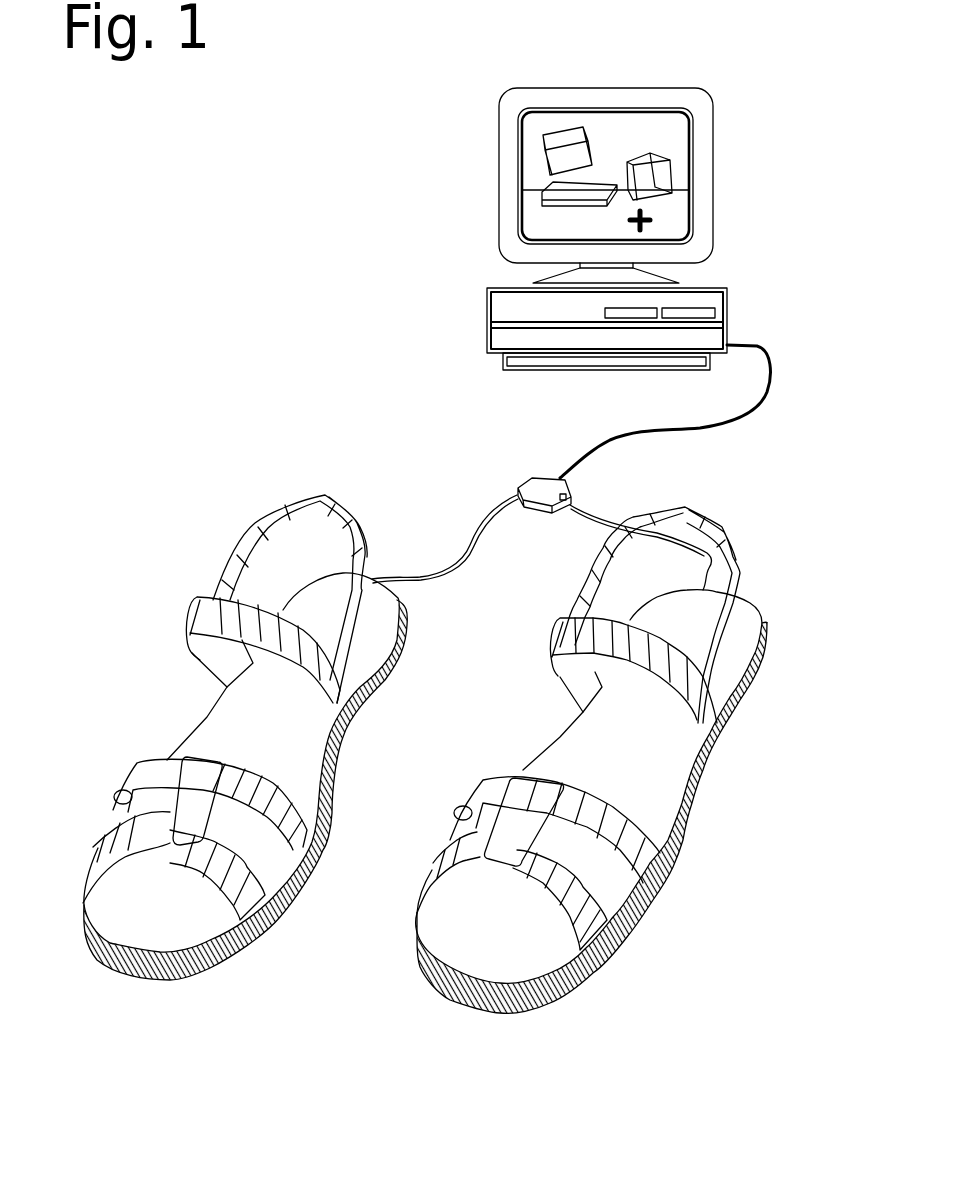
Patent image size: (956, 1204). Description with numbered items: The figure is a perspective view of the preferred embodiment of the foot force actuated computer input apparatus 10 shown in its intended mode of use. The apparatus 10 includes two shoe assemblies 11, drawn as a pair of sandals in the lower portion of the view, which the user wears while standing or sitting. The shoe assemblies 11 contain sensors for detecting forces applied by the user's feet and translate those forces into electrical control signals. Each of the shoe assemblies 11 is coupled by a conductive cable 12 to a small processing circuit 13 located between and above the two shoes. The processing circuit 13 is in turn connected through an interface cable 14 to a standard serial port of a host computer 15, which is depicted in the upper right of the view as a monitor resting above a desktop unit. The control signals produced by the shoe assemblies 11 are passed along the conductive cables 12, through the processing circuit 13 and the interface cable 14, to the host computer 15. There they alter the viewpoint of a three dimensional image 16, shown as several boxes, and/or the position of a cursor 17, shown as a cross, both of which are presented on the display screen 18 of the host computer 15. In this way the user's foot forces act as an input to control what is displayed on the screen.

The foot force actuated computer input apparatus 10 is at (292, 399).
The shoe assemblies 11 is at (410, 857).
The conductive cables 12 is at (487, 542).
The processing circuit 13 is at (528, 470).
The interface cable 14 is at (763, 412).
The host computer 15 is at (757, 127).
The three dimensional image 16 is at (538, 166).
The cursor 17 is at (662, 218).
The display screen 18 is at (595, 98).